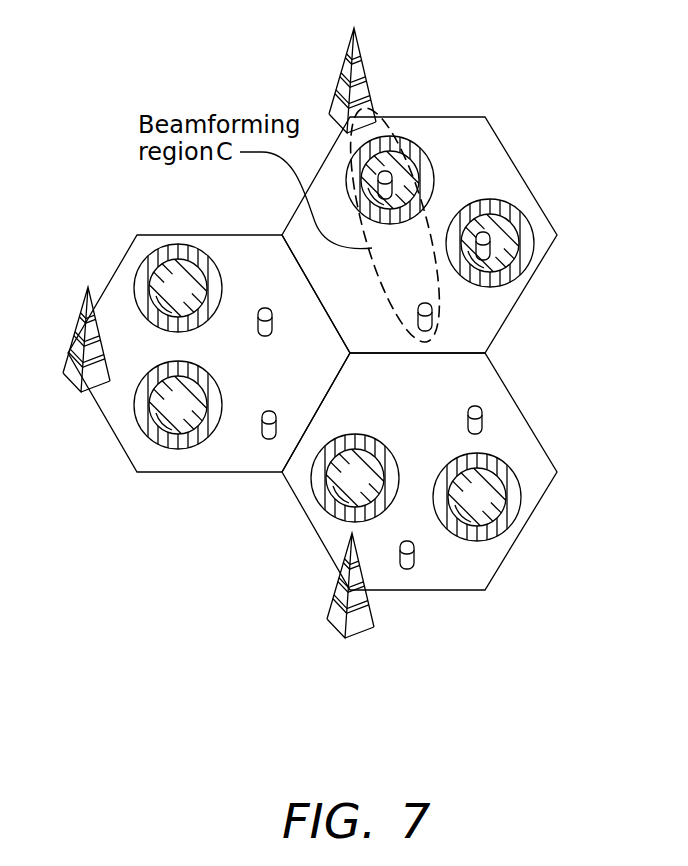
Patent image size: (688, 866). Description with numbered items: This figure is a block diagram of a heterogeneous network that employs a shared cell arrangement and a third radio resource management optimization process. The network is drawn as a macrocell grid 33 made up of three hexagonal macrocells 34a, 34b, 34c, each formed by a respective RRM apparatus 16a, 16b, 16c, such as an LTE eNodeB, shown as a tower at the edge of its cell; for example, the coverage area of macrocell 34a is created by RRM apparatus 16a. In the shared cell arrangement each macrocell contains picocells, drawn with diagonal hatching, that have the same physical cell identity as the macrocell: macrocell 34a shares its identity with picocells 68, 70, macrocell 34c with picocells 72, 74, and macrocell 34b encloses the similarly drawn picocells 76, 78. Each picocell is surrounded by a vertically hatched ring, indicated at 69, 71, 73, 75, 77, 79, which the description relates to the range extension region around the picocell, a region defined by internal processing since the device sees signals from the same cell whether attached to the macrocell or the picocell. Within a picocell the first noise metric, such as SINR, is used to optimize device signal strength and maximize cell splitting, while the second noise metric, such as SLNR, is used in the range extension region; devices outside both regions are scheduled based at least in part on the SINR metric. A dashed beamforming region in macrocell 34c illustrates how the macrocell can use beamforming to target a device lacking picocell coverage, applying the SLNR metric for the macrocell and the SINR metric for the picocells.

The macrocell grid 33 is at (538, 343).
The macrocell 34a is at (133, 243).
The macrocell 34b is at (320, 545).
The macrocell 34c is at (445, 117).
The RRM apparatus 16a is at (82, 303).
The RRM apparatus 16b is at (360, 640).
The RRM apparatus 16c is at (360, 50).
The picocell 68 is at (166, 299).
The coverage region boundary 69 is at (206, 288).
The picocell 70 is at (166, 416).
The coverage region boundary 71 is at (206, 404).
The picocell 72 is at (400, 153).
The coverage region boundary 73 is at (398, 176).
The picocell 74 is at (497, 225).
The coverage region boundary 75 is at (490, 242).
The coverage region 76 is at (343, 489).
The coverage region boundary 77 is at (367, 457).
The coverage region 78 is at (460, 560).
The coverage region boundary 79 is at (475, 514).